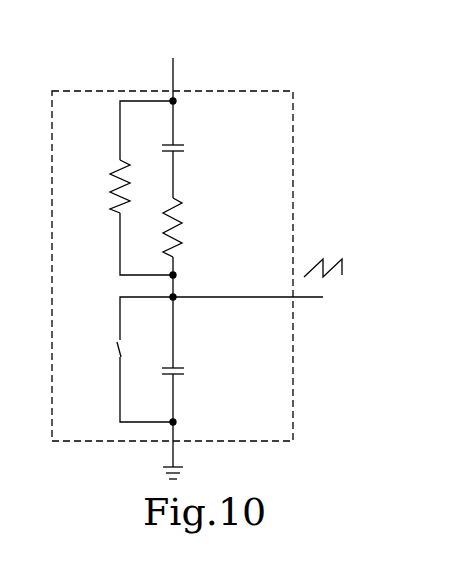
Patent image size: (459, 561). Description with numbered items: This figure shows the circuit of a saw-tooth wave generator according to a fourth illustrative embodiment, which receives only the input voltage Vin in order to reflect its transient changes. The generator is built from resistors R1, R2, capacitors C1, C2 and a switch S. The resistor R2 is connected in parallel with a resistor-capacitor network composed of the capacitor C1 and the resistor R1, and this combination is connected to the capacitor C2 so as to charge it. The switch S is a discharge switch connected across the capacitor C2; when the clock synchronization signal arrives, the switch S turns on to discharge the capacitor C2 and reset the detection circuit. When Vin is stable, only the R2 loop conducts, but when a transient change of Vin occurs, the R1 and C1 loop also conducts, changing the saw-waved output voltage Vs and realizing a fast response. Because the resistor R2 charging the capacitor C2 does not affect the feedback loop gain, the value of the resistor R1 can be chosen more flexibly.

The input voltage Vin is at (170, 89).
The saw-waved output voltage Vs is at (263, 284).
The capacitor C1 is at (189, 169).
The capacitor C2 is at (189, 420).
The resistor R1 is at (189, 283).
The resistor R2 is at (130, 188).
The switch S is at (136, 359).